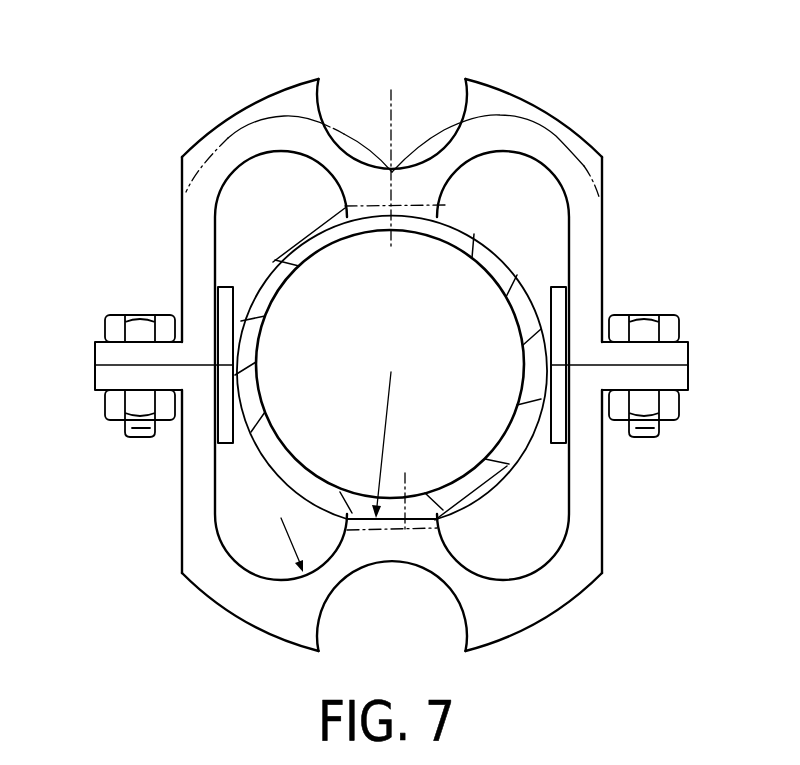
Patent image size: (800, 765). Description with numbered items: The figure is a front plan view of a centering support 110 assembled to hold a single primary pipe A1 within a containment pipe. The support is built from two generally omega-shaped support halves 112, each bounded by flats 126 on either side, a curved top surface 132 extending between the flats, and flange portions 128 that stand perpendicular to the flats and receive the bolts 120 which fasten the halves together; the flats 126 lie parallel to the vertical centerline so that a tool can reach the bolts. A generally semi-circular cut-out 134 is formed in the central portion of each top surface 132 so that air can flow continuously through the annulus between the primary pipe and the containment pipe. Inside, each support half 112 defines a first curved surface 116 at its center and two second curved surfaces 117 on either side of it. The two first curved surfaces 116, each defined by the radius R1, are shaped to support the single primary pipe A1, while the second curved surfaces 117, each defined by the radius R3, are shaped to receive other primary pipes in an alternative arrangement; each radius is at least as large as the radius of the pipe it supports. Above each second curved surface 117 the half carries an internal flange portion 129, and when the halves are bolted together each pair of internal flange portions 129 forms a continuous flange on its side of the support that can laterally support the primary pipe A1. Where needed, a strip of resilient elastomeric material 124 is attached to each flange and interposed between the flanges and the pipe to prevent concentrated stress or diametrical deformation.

The centering support 110 is at (547, 70).
The support half 112 is at (262, 105).
The first curved surface 116 is at (383, 206).
The second curved surface 117 is at (277, 152).
The bolts 120 is at (130, 314).
The resilient elastomeric material 124 is at (447, 205).
The flats 126 is at (182, 268).
The flange portions 128 is at (94, 373).
The internal flange portions 129 is at (222, 288).
The top surface 132 is at (556, 116).
The cut-out 134 is at (388, 139).
The primary pipe A1 is at (530, 282).
The radius of the first curved surfaces R1 is at (406, 445).
The radius of the second curved surfaces R3 is at (288, 545).